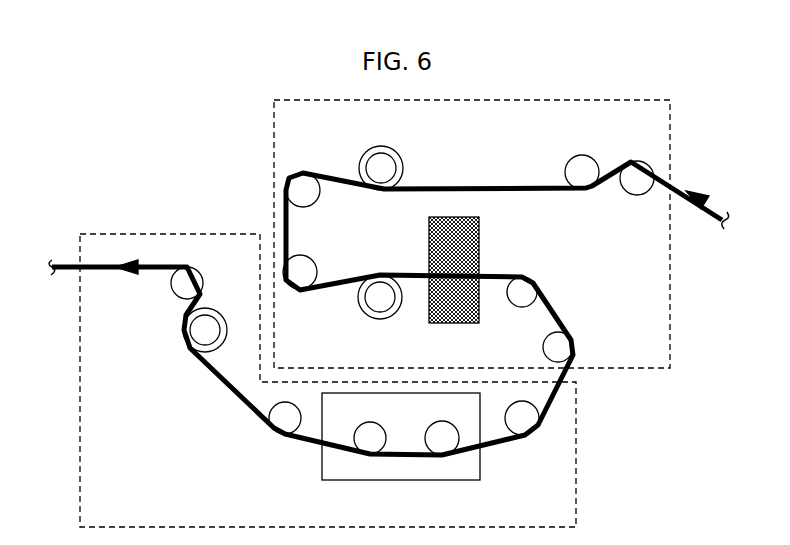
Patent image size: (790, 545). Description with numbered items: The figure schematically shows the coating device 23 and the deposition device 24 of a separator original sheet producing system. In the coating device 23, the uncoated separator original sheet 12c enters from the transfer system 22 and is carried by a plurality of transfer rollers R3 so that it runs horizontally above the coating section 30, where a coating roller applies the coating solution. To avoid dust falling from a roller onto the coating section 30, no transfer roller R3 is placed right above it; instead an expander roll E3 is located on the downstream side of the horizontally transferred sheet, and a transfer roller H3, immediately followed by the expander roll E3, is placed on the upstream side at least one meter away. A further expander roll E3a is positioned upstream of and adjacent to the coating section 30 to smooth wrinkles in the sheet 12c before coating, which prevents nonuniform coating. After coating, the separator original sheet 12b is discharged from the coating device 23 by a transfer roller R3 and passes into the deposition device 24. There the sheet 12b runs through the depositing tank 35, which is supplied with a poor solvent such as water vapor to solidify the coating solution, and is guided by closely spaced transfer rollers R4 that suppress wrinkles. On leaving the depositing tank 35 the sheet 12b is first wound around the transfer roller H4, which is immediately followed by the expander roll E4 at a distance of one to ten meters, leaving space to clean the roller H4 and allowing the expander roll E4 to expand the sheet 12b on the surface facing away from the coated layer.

The coating device 23 is at (672, 132).
The deposition device 24 is at (78, 420).
The transfer system 22 is at (633, 253).
The coating section 30 is at (480, 230).
The depositing tank 35 is at (344, 483).
The expander roll E3 is at (380, 159).
The expander roll E3a is at (370, 318).
The expander roll E4 is at (187, 346).
The transfer roller H3 is at (582, 163).
The transfer roller H4 is at (284, 433).
The transfer rollers R3 is at (307, 200).
The transfer rollers R4 is at (372, 448).
The separator original sheet 12b is at (556, 303).
The separator original sheet 12c is at (615, 166).